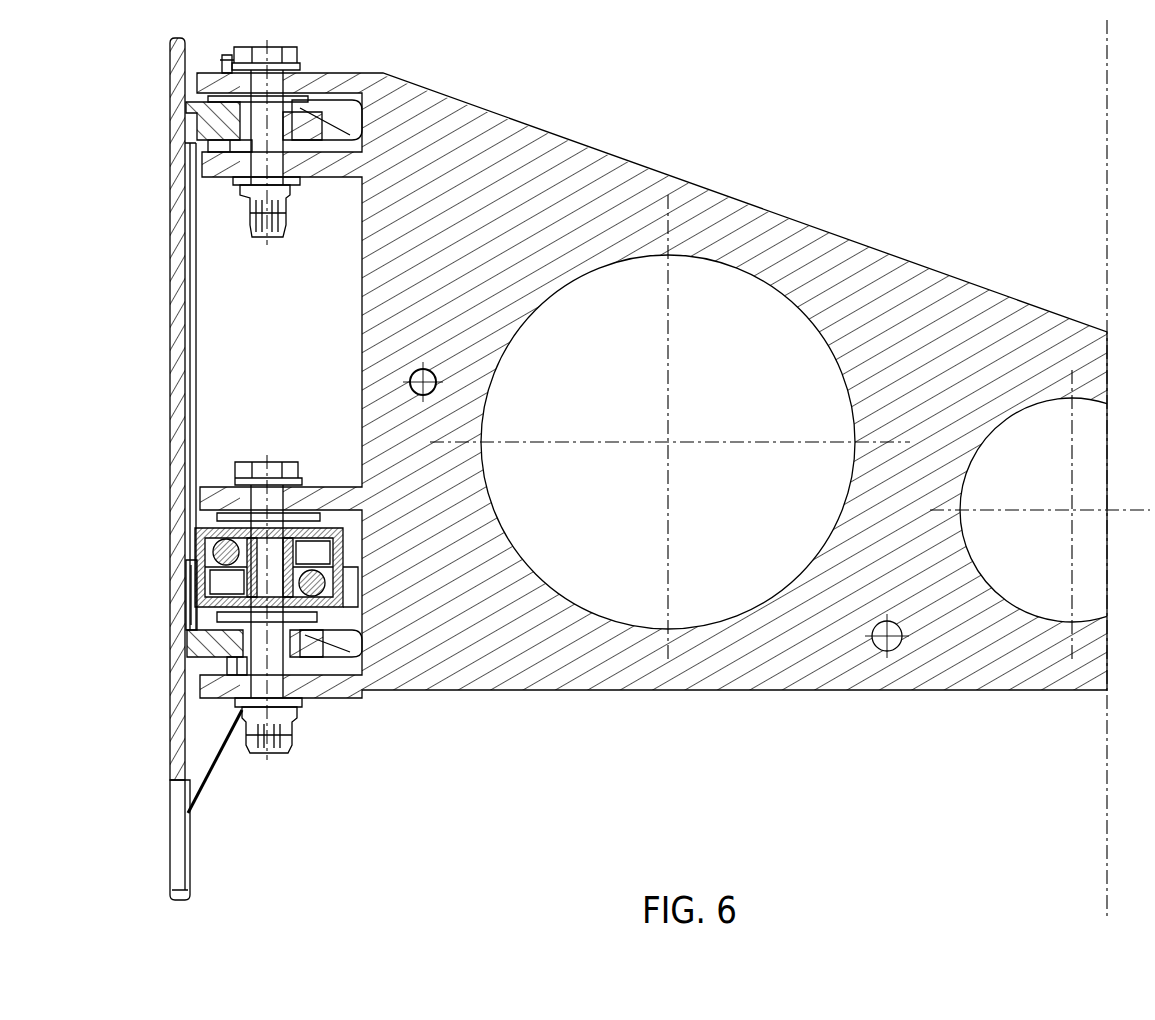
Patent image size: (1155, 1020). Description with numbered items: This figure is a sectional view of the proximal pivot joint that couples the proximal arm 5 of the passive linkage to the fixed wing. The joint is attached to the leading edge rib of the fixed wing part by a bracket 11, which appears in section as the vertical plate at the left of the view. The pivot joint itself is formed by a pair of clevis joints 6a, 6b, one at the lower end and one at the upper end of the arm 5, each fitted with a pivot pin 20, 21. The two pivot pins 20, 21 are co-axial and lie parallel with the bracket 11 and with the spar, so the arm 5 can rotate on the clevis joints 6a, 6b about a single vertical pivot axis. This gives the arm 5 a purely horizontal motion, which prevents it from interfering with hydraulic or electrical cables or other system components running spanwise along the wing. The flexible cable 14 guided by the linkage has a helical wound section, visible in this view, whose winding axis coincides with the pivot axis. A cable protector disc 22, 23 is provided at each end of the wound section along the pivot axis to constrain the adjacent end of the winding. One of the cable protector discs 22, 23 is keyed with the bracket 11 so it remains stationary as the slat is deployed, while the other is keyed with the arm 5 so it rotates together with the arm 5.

The proximal arm 5 is at (545, 147).
The bracket 11 is at (178, 262).
The flexible cable 14 is at (207, 555).
The pivot pin 20 is at (272, 92).
The pivot pin 21 is at (273, 500).
The cable protector disc 22 is at (333, 518).
The cable protector disc 23 is at (197, 601).
The clevis joint 6a is at (265, 776).
The clevis joint 6b is at (262, 262).